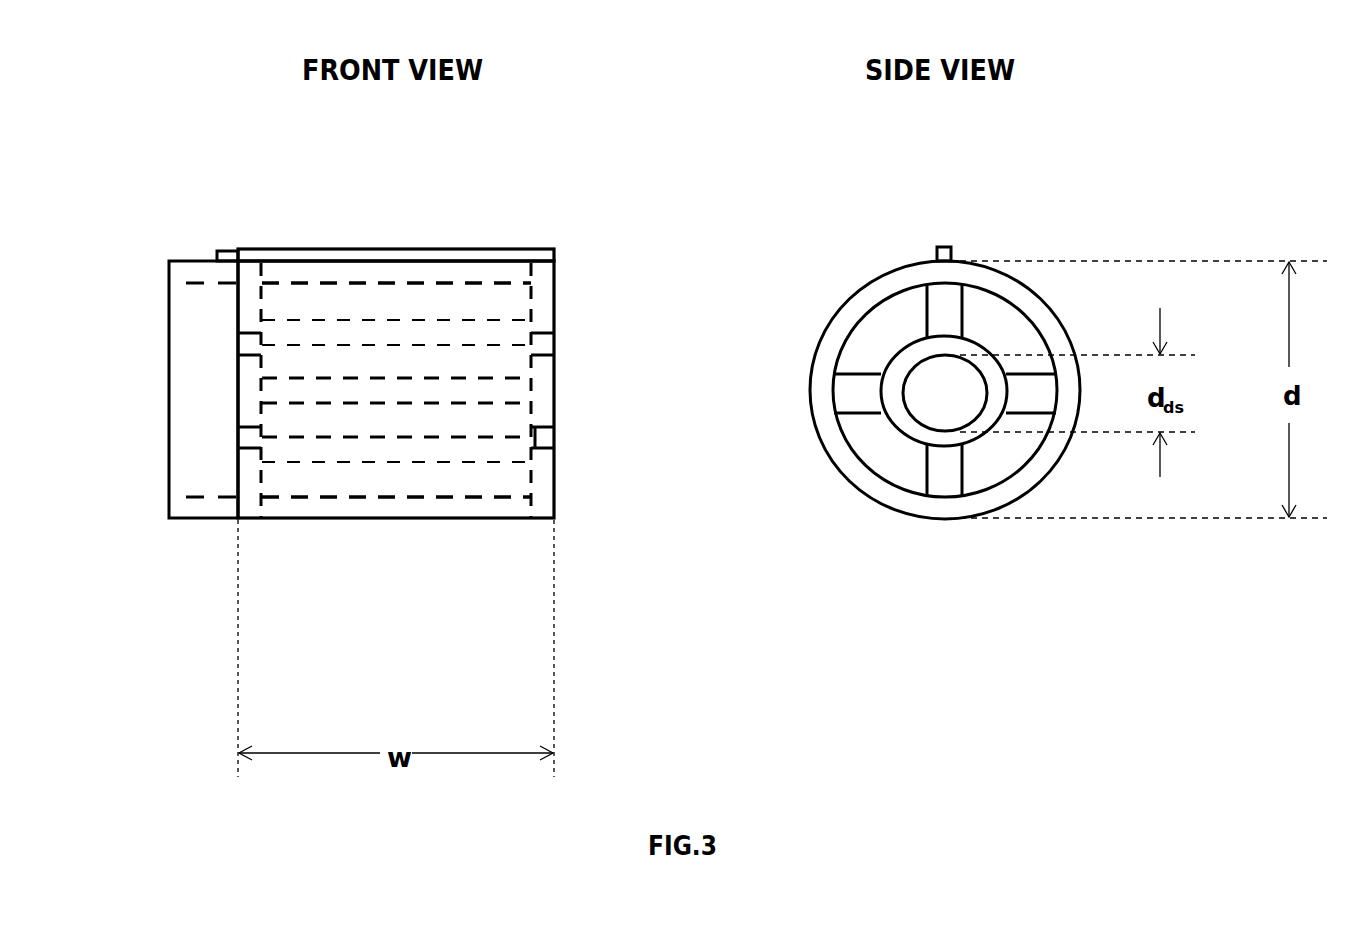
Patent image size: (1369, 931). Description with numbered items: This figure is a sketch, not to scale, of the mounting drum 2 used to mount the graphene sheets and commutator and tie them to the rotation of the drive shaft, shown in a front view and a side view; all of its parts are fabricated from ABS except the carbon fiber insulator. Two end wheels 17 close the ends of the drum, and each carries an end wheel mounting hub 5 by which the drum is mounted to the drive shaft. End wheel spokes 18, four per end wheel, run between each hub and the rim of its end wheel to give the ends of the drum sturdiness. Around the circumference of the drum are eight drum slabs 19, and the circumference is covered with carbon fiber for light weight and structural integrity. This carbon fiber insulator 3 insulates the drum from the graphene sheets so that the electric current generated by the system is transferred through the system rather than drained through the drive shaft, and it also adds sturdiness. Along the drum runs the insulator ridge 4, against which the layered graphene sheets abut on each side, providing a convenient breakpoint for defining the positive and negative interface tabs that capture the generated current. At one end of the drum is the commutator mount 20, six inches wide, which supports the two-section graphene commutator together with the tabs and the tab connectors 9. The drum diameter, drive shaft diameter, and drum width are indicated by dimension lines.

The mounting drum 2 is at (945, 463).
The carbon fiber insulator 3 is at (945, 519).
The insulator ridge 4 is at (391, 249).
The end wheel mounting hub 5 is at (897, 350).
The tab connector 9 is at (228, 250).
The end wheel 17 is at (555, 517).
The end wheel spoke 18 is at (1040, 215).
The drum slab 19 is at (397, 518).
The commutator mount 20 is at (205, 520).